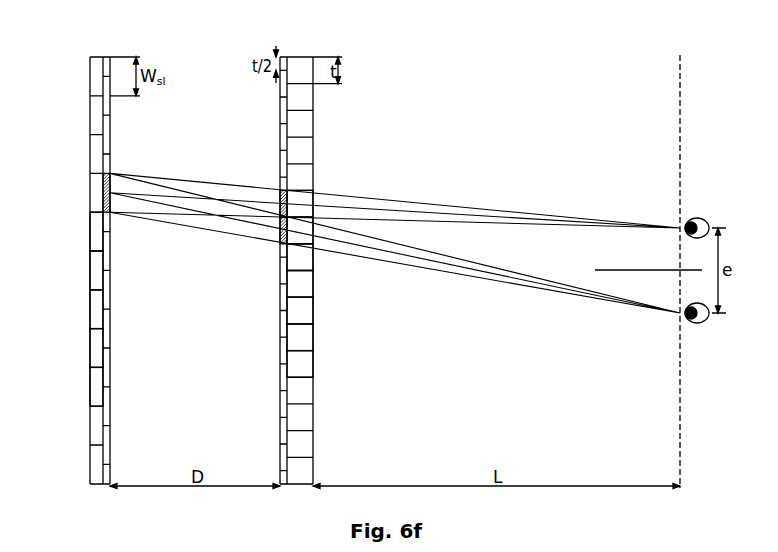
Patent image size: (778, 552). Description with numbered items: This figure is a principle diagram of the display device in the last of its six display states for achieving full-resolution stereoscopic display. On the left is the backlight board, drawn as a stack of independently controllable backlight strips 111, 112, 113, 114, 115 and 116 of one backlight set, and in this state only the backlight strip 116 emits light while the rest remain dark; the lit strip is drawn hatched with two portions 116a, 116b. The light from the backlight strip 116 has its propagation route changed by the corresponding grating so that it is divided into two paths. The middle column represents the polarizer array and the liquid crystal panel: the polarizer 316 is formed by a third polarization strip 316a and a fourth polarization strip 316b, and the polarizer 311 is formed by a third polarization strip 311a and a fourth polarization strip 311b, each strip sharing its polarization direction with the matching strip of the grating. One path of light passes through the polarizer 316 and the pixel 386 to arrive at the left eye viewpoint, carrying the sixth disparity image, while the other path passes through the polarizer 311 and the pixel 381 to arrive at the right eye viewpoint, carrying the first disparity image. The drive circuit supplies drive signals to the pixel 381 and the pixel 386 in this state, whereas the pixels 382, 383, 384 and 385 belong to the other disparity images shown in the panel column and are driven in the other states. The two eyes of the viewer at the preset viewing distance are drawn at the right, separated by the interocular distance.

The backlight strip 111 is at (97, 390).
The backlight strip 112 is at (97, 350).
The backlight strip 113 is at (97, 312).
The backlight strip 114 is at (97, 275).
The backlight strip 115 is at (97, 236).
The backlight strip 116 is at (97, 193).
The first sub-pixel region 116a is at (108, 181).
The second sub-pixel region 116b is at (110, 213).
The polarizer 311 is at (262, 161).
The third polarization strip 311a is at (283, 196).
The fourth polarization strip 311b is at (282, 208).
The polarizer 316 is at (272, 269).
The third polarization strip 316a is at (283, 239).
The fourth polarization strip 316b is at (281, 226).
The pixel 381 is at (313, 196).
The pixel 382 is at (309, 342).
The pixel 383 is at (309, 304).
The pixel 384 is at (309, 290).
The pixel 385 is at (309, 262).
The pixel 386 is at (307, 236).